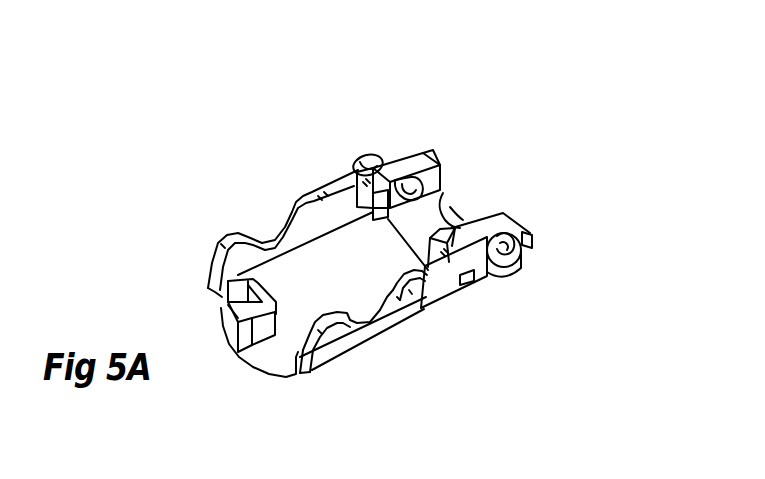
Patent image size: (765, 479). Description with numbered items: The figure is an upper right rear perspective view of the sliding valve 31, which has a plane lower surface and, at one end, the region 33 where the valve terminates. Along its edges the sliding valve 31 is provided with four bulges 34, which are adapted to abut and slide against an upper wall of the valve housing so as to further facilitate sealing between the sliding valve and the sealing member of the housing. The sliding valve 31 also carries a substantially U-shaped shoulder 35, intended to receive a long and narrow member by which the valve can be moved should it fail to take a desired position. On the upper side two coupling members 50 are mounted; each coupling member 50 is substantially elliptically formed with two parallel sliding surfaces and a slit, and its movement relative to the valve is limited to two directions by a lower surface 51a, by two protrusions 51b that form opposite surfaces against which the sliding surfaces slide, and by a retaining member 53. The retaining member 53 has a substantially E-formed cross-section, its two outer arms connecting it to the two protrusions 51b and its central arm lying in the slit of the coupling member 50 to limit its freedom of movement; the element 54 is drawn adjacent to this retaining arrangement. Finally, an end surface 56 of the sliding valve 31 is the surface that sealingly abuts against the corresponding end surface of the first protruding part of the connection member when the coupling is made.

The sliding valve 31 is at (271, 164).
The body 33 is at (282, 383).
The bulges 34 is at (237, 232).
The U-shaped shoulder 35 is at (215, 300).
The coupling member 50 is at (370, 152).
The retaining member 53 is at (438, 165).
The end surface 56 is at (443, 193).
The lower surface 51a is at (450, 207).
The protrusions 51b is at (463, 220).
The tab 54 is at (532, 240).